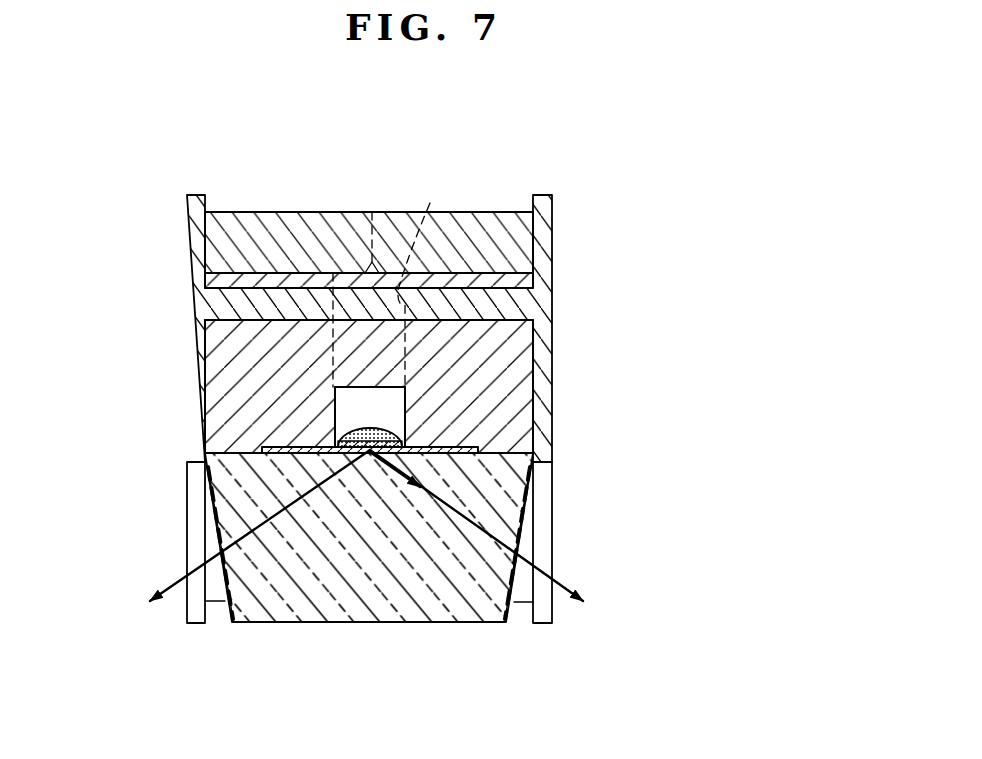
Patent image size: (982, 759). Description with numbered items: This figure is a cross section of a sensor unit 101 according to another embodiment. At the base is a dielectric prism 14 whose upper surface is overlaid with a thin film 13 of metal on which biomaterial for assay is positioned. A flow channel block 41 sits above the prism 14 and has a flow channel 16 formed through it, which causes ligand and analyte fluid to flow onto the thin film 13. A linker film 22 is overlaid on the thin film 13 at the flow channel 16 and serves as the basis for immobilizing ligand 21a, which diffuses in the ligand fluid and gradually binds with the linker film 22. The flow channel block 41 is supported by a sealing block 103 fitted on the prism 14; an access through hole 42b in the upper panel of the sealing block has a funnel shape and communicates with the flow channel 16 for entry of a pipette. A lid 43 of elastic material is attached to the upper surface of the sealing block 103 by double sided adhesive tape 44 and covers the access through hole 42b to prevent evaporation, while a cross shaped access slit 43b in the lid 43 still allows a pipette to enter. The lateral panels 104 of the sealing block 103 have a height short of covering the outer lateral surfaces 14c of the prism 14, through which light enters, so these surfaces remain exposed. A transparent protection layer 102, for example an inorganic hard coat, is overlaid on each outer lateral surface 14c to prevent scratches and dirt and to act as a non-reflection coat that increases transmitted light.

The sensor unit 101 is at (512, 170).
The sealing block 103 is at (556, 225).
The lateral panels 104 is at (187, 525).
The lid 43 is at (515, 255).
The access slit 43b is at (372, 212).
The access through hole 42b is at (399, 282).
The double sided adhesive tape 44 is at (515, 283).
The flow channel block 41 is at (228, 373).
The flow channel 16 is at (405, 398).
The thin film 13 is at (292, 453).
The ligand 21a is at (392, 428).
The linker film 22 is at (336, 444).
The prism 14 is at (366, 631).
The outer lateral surface 14c is at (224, 578).
The protection layer 102 is at (230, 624).